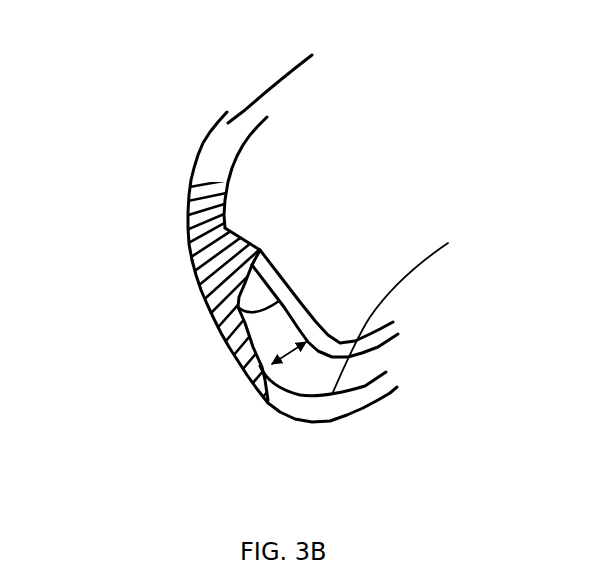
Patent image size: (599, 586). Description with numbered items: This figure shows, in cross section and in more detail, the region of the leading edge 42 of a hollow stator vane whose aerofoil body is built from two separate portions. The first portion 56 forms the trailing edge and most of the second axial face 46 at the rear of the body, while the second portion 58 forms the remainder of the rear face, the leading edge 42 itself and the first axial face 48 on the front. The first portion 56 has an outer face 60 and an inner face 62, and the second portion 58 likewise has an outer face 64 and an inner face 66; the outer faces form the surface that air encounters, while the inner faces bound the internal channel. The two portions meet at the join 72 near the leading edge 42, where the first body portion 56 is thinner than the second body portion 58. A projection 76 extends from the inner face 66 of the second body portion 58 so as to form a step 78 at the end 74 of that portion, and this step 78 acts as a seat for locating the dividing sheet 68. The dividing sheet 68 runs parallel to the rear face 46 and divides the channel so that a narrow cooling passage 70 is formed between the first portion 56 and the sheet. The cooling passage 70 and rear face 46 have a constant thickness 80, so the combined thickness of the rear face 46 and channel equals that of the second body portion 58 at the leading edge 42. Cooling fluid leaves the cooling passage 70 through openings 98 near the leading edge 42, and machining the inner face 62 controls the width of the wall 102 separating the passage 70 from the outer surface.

The leading edge 42 is at (112, 62).
The second axial face 46 is at (335, 408).
The first axial face 48 is at (221, 114).
The first portion 56 is at (378, 389).
The second portion 58 is at (285, 75).
The outer face 60 is at (298, 421).
The inner face 62 is at (409, 311).
The outer face 64 is at (196, 158).
The inner face 66 is at (247, 144).
The dividing sheet 68 is at (390, 328).
The cooling passage 70 is at (352, 368).
The join 72 is at (218, 332).
The end 74 is at (283, 297).
The projection 76 is at (262, 247).
The step 78 is at (266, 258).
The thickness 80 is at (271, 367).
The openings 98 is at (201, 291).
The wall 102 is at (352, 418).